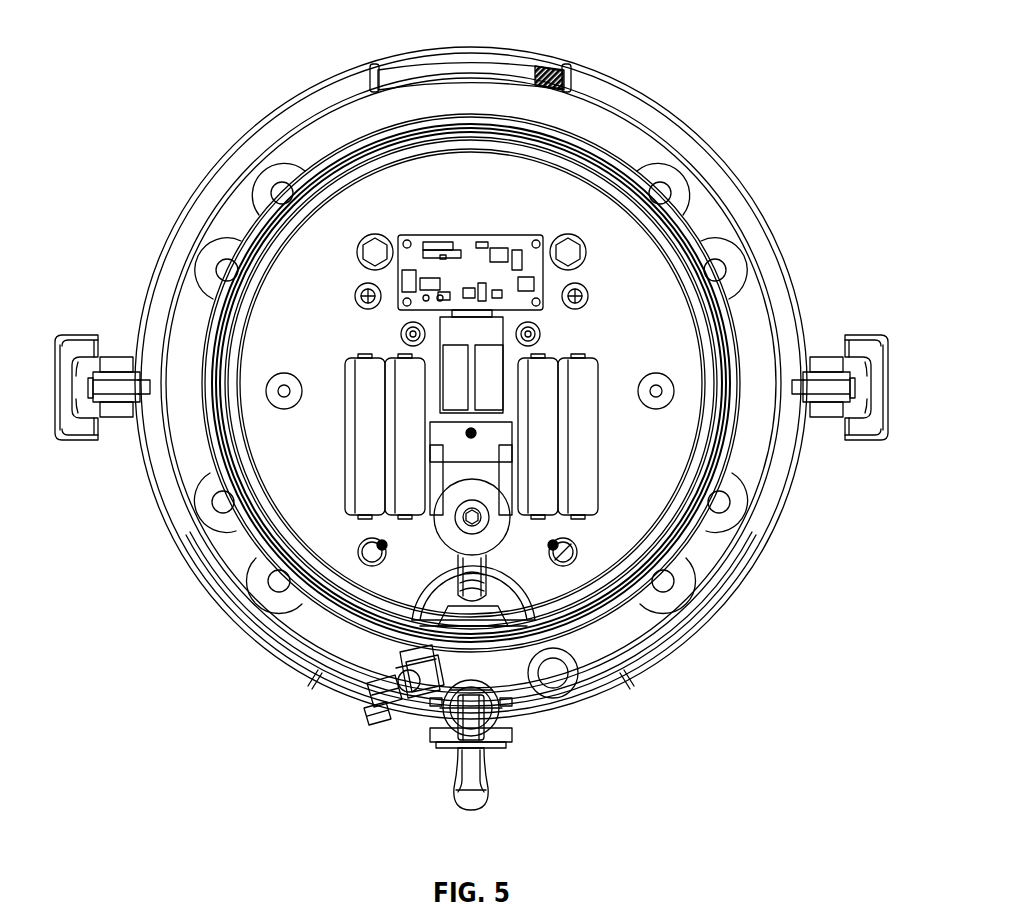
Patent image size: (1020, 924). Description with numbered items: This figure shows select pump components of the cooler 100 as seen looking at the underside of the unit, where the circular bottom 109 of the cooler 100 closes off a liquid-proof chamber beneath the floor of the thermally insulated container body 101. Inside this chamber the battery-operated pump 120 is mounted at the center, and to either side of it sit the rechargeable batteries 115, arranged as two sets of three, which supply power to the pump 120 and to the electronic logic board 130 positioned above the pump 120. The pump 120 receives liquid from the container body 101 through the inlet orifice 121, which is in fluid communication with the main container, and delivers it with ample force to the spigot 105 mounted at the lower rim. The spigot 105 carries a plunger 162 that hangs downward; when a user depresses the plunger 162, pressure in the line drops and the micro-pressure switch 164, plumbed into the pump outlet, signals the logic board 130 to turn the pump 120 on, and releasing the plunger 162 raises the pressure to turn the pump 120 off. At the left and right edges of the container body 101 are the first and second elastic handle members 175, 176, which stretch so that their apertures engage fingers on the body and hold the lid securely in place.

The cooler assembly 100 is at (200, 52).
The container body 101 is at (802, 478).
The spigot 105 is at (436, 742).
The bottom 109 is at (333, 326).
The rechargeable batteries 115 is at (380, 422).
The battery-operated pump 120 is at (488, 433).
The inlet orifice 121 is at (608, 553).
The electronic logic board 130 is at (498, 238).
The plunger 162 is at (496, 774).
The micro-pressure switch 164 is at (553, 673).
The first elastic handle member 175 is at (44, 372).
The second elastic handle member 176 is at (903, 385).